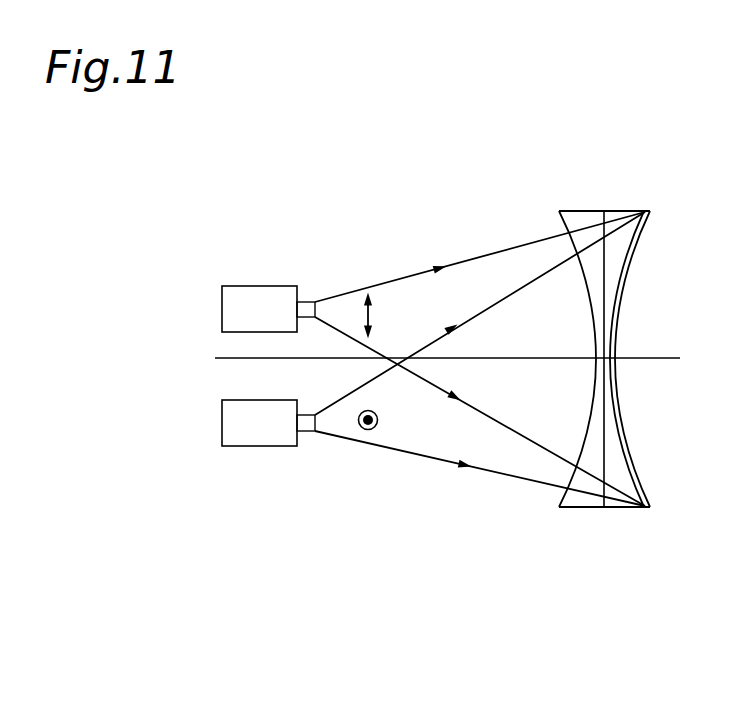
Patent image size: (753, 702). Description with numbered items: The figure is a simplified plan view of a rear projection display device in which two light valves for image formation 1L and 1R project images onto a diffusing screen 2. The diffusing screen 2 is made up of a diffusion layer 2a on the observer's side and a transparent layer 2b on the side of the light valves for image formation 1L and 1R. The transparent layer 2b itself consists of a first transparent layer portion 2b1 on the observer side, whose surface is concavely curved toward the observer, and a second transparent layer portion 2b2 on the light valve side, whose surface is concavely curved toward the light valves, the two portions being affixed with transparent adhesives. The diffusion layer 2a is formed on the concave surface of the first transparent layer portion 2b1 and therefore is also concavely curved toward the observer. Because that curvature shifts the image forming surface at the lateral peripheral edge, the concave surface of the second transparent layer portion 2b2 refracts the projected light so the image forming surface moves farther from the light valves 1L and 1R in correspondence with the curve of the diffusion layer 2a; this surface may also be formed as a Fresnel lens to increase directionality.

The light valve for image formation 1R is at (256, 292).
The light valve for image formation 1L is at (266, 438).
The diffusing screen 2 is at (608, 444).
The diffusion layer 2a is at (650, 508).
The transparent layer 2b is at (593, 421).
The first transparent layer portion 2b1 is at (613, 508).
The second transparent layer portion 2b2 is at (577, 508).